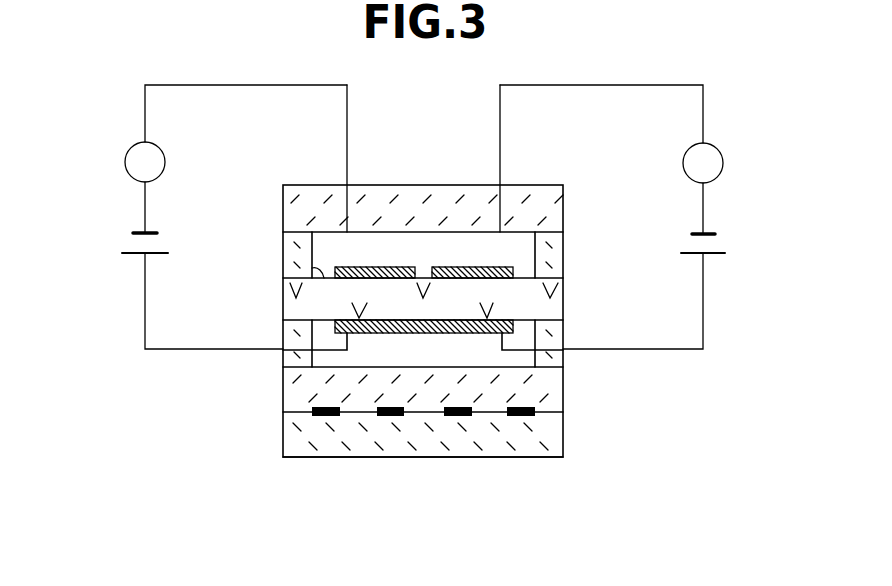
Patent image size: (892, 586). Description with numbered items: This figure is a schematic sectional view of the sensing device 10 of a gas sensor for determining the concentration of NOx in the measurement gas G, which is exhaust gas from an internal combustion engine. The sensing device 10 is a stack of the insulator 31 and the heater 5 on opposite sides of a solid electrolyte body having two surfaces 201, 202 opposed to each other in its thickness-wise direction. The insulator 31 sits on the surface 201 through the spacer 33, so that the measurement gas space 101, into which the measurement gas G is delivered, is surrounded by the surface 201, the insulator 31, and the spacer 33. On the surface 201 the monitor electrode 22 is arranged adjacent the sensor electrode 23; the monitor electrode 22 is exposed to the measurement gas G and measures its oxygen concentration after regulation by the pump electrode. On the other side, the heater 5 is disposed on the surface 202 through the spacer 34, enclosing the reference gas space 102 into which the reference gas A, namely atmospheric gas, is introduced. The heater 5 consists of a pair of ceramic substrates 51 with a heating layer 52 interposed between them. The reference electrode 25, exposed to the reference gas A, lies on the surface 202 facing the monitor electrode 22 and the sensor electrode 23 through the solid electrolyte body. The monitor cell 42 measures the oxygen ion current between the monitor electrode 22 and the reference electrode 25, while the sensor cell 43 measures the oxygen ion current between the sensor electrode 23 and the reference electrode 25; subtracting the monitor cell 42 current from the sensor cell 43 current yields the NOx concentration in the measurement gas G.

The sensing device 10 is at (607, 461).
The heater 5 is at (313, 460).
The insulator 31 is at (302, 212).
The measurement gas space 101 is at (517, 247).
The spacer 33 is at (548, 265).
The spacer 34 is at (548, 337).
The sensor electrode 23 is at (390, 265).
The monitor electrode 22 is at (484, 262).
The measurement gas G is at (428, 250).
The surface 201 is at (324, 277).
The surface 202 is at (320, 333).
The reference electrode 25 is at (403, 334).
The reference gas space 102 is at (513, 358).
The reference gas A is at (370, 352).
The ceramic substrates 51 is at (552, 395).
The heating layer 52 is at (522, 417).
The sensor cell 43 is at (118, 148).
The monitor cell 42 is at (733, 140).